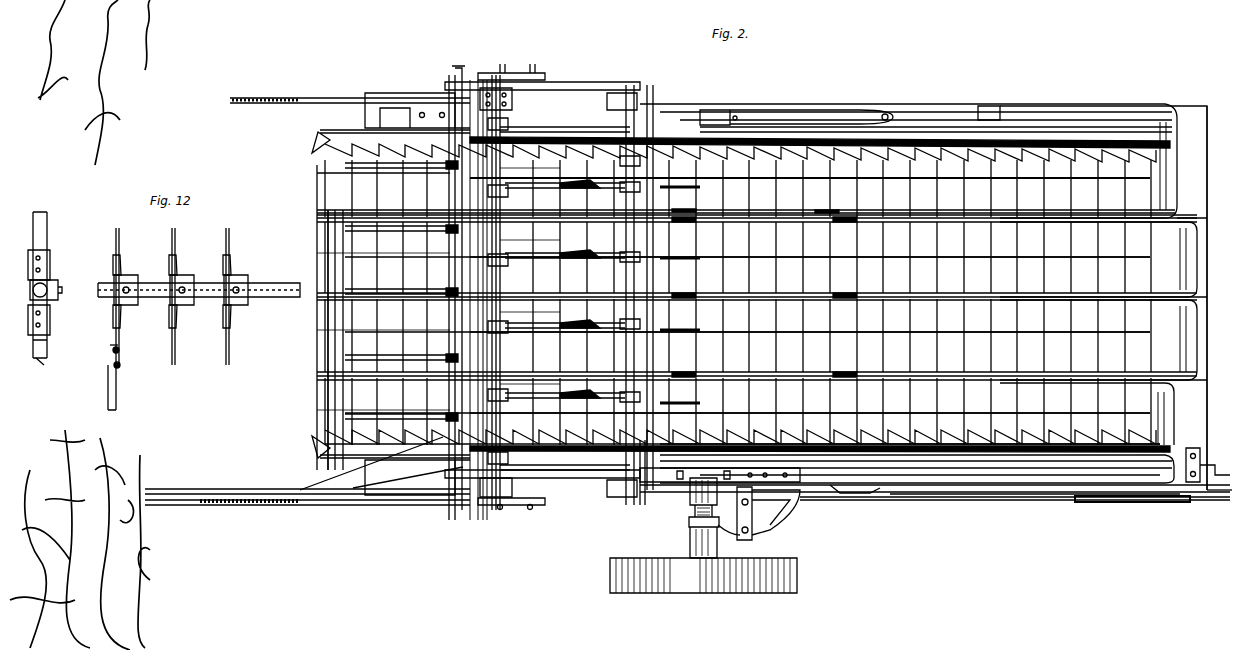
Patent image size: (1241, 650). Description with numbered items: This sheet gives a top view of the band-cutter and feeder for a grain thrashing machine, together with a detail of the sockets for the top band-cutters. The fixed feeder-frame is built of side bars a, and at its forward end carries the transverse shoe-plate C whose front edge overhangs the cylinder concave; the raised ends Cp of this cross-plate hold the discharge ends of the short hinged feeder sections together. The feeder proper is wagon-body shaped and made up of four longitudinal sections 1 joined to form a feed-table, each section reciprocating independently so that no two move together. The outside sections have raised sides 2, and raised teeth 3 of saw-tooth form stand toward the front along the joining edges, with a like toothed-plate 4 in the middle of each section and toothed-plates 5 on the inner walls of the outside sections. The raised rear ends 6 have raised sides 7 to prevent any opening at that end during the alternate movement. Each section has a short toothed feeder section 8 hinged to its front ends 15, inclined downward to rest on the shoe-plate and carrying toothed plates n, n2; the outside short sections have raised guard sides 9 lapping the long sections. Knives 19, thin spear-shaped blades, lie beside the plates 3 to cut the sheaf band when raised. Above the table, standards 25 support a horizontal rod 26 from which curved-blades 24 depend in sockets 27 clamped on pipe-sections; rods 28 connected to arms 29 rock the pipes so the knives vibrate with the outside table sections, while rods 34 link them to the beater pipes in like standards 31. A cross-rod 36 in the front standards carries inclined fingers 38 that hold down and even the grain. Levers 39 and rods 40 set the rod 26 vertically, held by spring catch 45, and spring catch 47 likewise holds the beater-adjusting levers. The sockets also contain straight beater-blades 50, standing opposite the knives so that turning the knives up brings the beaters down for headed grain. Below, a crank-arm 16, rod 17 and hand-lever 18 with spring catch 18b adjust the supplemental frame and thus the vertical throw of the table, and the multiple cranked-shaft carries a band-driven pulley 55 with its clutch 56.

In FIG. 2, the longitudinal sections 1 is at (738, 302).
In FIG. 2, the raised sides 2 is at (823, 293).
In FIG. 2, the raised teeth 3 is at (757, 289).
In FIG. 2, the toothed-plate 4 is at (810, 292).
In FIG. 2, the toothed-plates 5 is at (910, 436).
In FIG. 2, the raised rear ends 6 is at (1191, 298).
In FIG. 2, the sides 7 is at (1192, 315).
In FIG. 2, the short toothed feeder section 8 is at (383, 301).
In FIG. 2, the sides 9 is at (315, 294).
In FIG. 2, the ends 15 is at (530, 278).
In FIG. 2, the crank-arm 16 is at (855, 496).
In FIG. 2, the rod 17 is at (1035, 502).
In FIG. 2, the hand-lever 18 is at (1208, 481).
In FIG. 2, the spring catch 18b is at (1132, 504).
In FIG. 2, the knives 19 is at (764, 293).
In FIG. 2, the curved-blades 24 is at (565, 291).
In FIG. 12, the curved-blades 24 is at (125, 353).
In FIG. 2, the standards 25 is at (622, 295).
In FIG. 12, the horizontal rod 26 is at (48, 288).
In FIG. 12, the sockets 27 is at (133, 292).
In FIG. 2, the rods 28 is at (766, 296).
In FIG. 12, the rods 28 is at (100, 389).
In FIG. 2, the arms 29 is at (565, 297).
In FIG. 12, the arms 29 is at (102, 344).
In FIG. 2, the standards 31 is at (496, 292).
In FIG. 12, the rods 34 is at (128, 355).
In FIG. 2, the cross-rod 36 is at (443, 297).
In FIG. 2, the fingers 38 is at (405, 415).
In FIG. 2, the levers 39 is at (524, 296).
In FIG. 2, the rods 40 is at (542, 295).
In FIG. 2, the spring catch 45 is at (307, 482).
In FIG. 2, the spring catch 47 is at (307, 509).
In FIG. 2, the straight beater-blades 50 is at (680, 294).
In FIG. 12, the straight beater-blades 50 is at (131, 288).
In FIG. 2, the band-driven pulley 55 is at (703, 575).
In FIG. 2, the clutch 56 is at (694, 518).
In FIG. 2, the side bars a is at (350, 94).
In FIG. 2, the shoe-plate C is at (322, 340).
In FIG. 2, the raised ends Cp is at (406, 294).
In FIG. 2, the toothed plates n is at (394, 282).
In FIG. 2, the toothed plates n2 is at (395, 294).